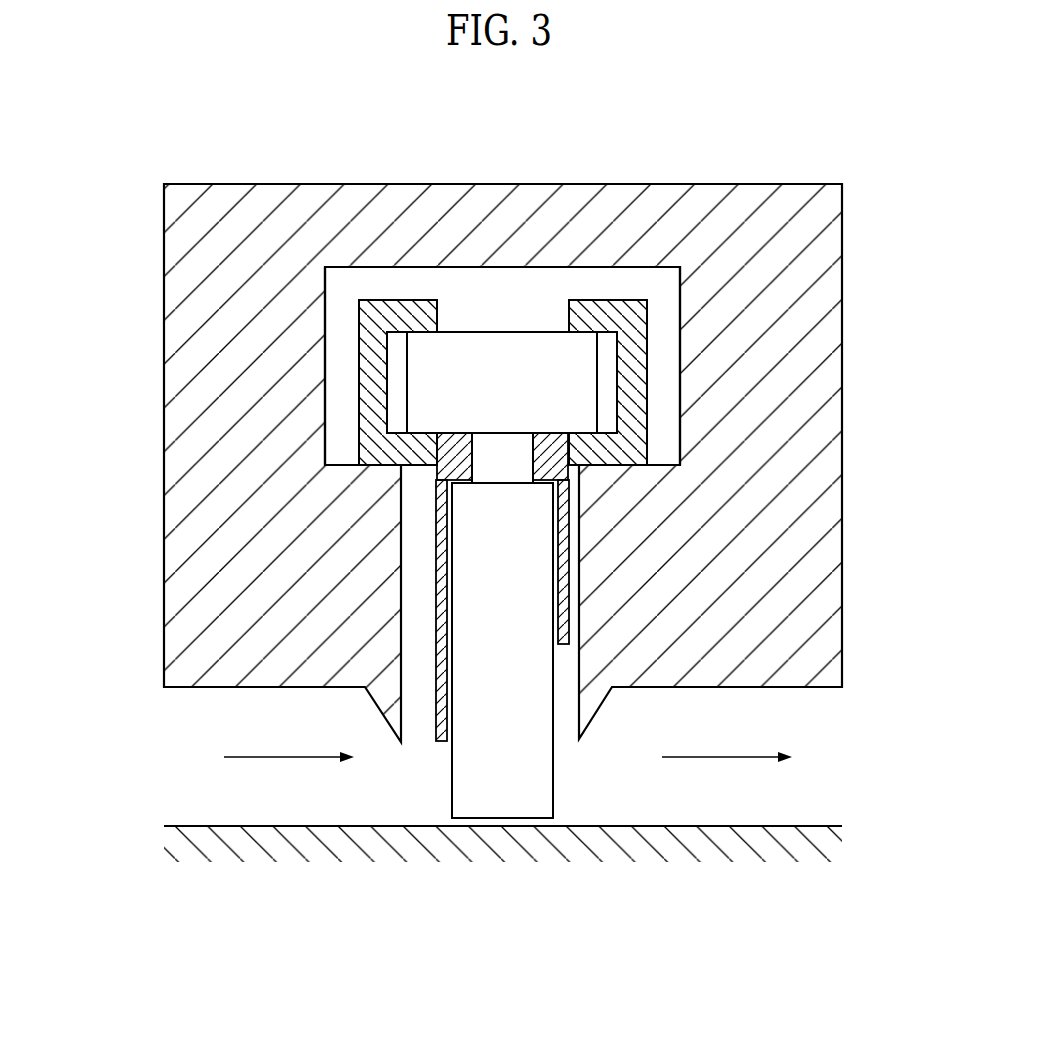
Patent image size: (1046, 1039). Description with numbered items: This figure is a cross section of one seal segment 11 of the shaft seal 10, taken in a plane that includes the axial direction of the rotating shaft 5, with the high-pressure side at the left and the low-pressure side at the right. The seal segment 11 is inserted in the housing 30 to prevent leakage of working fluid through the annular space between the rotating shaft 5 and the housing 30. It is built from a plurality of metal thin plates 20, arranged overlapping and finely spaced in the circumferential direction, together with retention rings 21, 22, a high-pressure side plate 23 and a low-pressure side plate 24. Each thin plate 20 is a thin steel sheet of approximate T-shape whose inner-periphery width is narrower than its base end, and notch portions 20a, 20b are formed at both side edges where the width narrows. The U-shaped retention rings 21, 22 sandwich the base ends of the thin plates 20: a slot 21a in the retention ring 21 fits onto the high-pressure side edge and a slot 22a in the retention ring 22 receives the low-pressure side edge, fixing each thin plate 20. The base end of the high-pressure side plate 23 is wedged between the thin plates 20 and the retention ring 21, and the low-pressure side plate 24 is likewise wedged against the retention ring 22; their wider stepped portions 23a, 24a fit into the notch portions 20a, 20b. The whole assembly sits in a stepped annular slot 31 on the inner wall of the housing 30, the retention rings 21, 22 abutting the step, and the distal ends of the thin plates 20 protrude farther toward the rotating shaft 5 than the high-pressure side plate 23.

The rotating shaft 5 is at (791, 835).
The shaft seal 10 is at (630, 275).
The seal segment 11 is at (583, 292).
The thin plate 20 is at (565, 779).
The notch portion 20a is at (474, 466).
The notch portion 20b is at (536, 470).
The retention ring 21 is at (371, 361).
The slot 21a is at (388, 391).
The retention ring 22 is at (632, 367).
The slot 22a is at (617, 388).
The high-pressure side plate 23 is at (425, 585).
The stepped portion 23a is at (458, 456).
The low-pressure side plate 24 is at (584, 575).
The stepped portion 24a is at (548, 452).
The housing 30 is at (823, 275).
The annular slot 31 is at (325, 290).